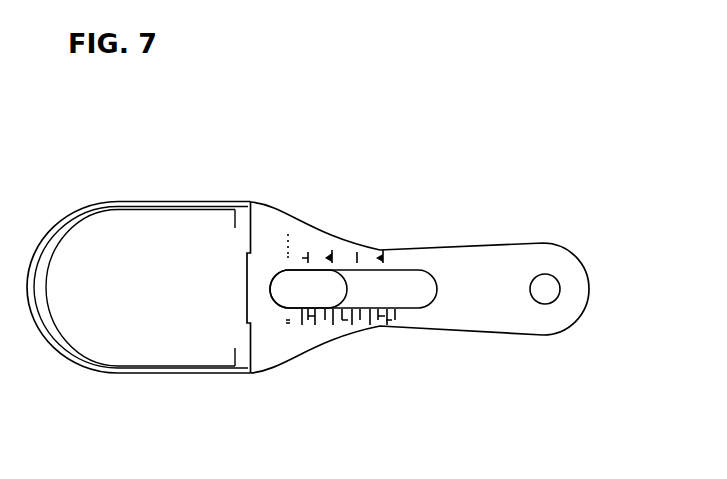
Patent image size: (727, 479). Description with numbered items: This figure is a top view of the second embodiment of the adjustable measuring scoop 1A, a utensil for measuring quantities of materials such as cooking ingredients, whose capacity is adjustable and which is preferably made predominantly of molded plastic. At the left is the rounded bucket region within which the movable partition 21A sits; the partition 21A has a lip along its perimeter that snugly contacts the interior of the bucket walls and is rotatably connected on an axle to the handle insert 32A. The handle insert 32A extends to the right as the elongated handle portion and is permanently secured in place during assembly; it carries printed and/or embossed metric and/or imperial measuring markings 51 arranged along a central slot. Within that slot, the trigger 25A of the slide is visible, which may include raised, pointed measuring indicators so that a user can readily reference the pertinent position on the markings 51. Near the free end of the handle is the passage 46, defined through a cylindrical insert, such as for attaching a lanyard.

The scoop 1A is at (168, 372).
The movable partition 21A is at (160, 255).
The trigger 25A is at (308, 287).
The handle insert 32A is at (505, 272).
The passage 46 is at (550, 287).
The measuring markings 51 is at (337, 322).